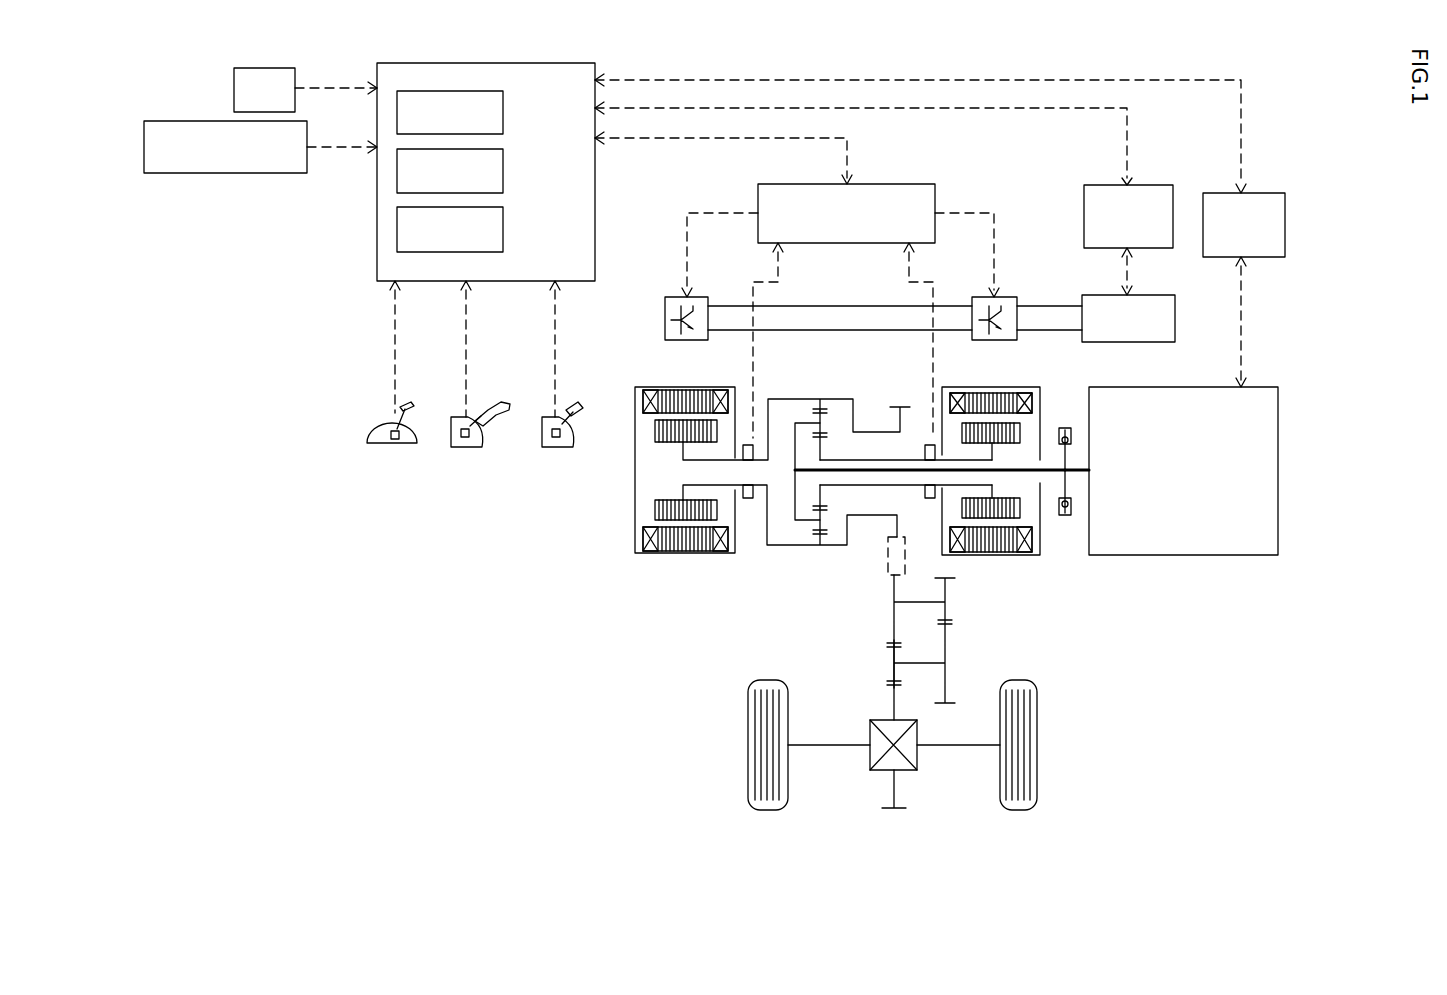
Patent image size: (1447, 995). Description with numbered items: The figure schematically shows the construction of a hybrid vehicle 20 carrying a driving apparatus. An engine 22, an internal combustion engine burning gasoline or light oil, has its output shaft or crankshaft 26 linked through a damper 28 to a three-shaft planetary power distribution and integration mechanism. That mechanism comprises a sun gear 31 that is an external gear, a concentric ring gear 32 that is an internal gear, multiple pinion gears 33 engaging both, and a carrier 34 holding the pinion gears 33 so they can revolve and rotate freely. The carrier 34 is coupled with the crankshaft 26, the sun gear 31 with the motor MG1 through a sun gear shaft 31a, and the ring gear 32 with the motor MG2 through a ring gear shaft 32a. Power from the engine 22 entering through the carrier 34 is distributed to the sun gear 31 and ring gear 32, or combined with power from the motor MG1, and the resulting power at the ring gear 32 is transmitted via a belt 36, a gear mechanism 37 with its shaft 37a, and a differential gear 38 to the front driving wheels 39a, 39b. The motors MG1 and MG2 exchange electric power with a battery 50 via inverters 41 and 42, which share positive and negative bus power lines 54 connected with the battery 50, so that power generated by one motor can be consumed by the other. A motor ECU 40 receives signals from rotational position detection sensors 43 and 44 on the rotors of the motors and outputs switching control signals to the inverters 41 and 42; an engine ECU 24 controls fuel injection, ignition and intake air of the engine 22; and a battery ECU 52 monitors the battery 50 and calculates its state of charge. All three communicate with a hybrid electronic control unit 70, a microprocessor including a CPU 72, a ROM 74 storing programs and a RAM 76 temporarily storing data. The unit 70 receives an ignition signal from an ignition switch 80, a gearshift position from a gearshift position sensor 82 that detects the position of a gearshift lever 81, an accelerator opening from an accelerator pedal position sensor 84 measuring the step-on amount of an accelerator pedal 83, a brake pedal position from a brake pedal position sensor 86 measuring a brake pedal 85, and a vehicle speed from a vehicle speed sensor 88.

The hybrid vehicle 20 is at (1269, 65).
The engine 22 is at (1278, 475).
The engine electronic control unit 24 is at (1278, 190).
The crankshaft 26 is at (1077, 475).
The damper 28 is at (1063, 515).
The sun gear 31 is at (832, 520).
The sun gear shaft 31a is at (895, 487).
The ring gear 32 is at (825, 399).
The ring gear shaft 32a is at (728, 492).
The pinion gears 33 is at (827, 432).
The carrier 34 is at (795, 423).
The belt 36 is at (908, 552).
The gear mechanism 37 is at (1050, 655).
The gear mechanism shaft 37a is at (897, 657).
The differential gear 38 is at (915, 757).
The front driving wheel 39a is at (748, 783).
The front driving wheel 39b is at (1037, 782).
The motor electronic control unit 40 is at (895, 184).
The inverter 41 is at (672, 296).
The inverter 42 is at (1010, 297).
The rotational position detection sensor 43 is at (928, 443).
The rotational position detection sensor 44 is at (746, 440).
The battery 50 is at (1175, 320).
The battery electronic control unit 52 is at (1150, 185).
The power lines 54 is at (822, 330).
The hybrid electronic control unit 70 is at (375, 240).
The CPU 72 is at (505, 118).
The ROM 74 is at (505, 176).
The RAM 76 is at (505, 234).
The ignition switch 80 is at (233, 84).
The gearshift lever 81 is at (406, 410).
The gearshift position sensor 82 is at (390, 446).
The accelerator pedal 83 is at (485, 423).
The accelerator pedal position sensor 84 is at (463, 450).
The brake pedal 85 is at (575, 422).
The brake pedal position sensor 86 is at (555, 450).
The vehicle speed sensor 88 is at (230, 174).
The motor MG1 is at (1002, 555).
The motor MG2 is at (680, 555).